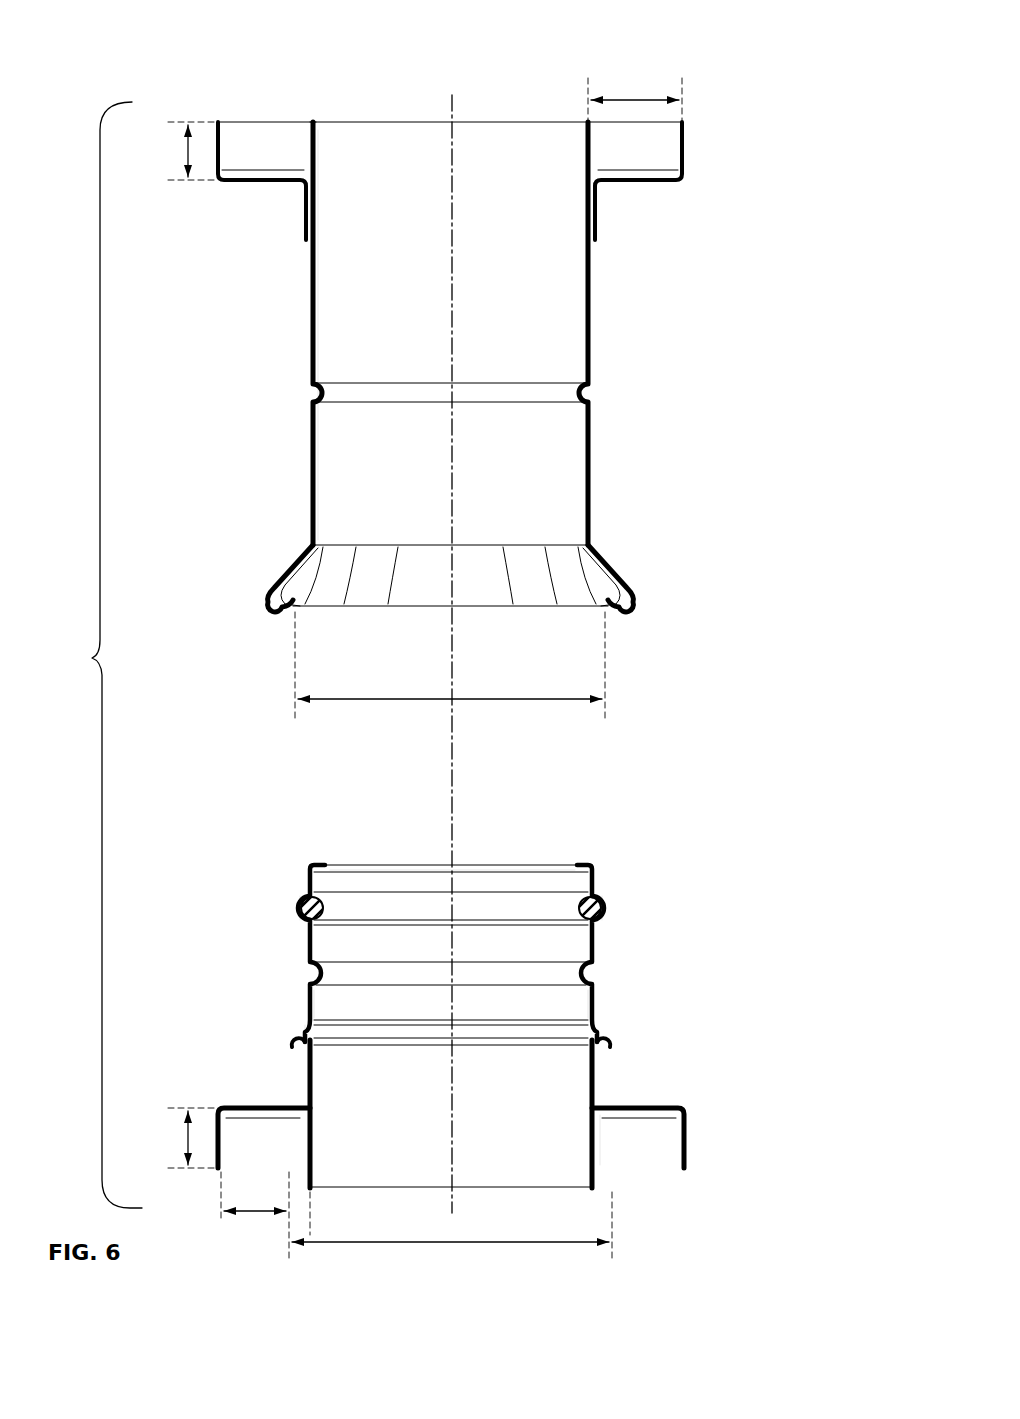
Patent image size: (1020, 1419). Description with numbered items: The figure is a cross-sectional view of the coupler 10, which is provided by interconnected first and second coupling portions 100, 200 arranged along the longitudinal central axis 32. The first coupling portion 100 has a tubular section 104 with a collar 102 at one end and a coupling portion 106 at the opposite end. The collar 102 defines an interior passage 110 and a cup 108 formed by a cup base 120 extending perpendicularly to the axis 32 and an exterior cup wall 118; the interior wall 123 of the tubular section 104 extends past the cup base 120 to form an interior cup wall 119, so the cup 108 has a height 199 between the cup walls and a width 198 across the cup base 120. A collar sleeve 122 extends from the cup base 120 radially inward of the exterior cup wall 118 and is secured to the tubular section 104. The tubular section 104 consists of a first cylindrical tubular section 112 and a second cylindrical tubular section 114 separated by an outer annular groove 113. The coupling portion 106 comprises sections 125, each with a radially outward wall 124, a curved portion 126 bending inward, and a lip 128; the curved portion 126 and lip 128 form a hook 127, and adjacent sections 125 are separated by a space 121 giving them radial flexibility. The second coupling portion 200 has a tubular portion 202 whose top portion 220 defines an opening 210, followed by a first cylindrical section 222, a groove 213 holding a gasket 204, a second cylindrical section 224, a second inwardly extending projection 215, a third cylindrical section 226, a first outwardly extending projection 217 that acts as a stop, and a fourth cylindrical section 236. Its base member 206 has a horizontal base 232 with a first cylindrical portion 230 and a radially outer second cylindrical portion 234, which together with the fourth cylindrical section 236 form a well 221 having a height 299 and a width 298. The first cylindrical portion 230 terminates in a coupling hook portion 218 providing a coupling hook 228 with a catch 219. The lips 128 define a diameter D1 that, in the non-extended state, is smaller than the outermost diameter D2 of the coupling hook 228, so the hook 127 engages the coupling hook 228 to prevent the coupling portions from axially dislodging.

The coupler 10 is at (100, 655).
The longitudinal central axis 32 is at (454, 102).
The first coupling portion 100 is at (421, 405).
The collar 102 is at (408, 146).
The tubular section 104 is at (515, 312).
The coupling portion 106 is at (491, 624).
The cup 108 is at (648, 168).
The interior passage 110 is at (483, 196).
The first cylindrical tubular section 112 is at (593, 283).
The outer annular groove 113 is at (594, 394).
The second cylindrical tubular section 114 is at (593, 472).
The exterior cup wall 118 is at (224, 137).
The interior cup wall 119 is at (316, 148).
The cup base 120 is at (275, 175).
The space 121 is at (510, 612).
The collar sleeve 122 is at (308, 230).
The interior wall 123 is at (316, 272).
The wall 124 is at (284, 566).
The sections 125 is at (368, 612).
The curved portion 126 is at (277, 618).
The hook 127 is at (292, 600).
The lip 128 is at (425, 610).
The width 198 is at (643, 100).
The height 199 is at (186, 150).
The second coupling portion 200 is at (446, 1028).
The tubular portion 202 is at (453, 939).
The gasket 204 is at (600, 912).
The base member 206 is at (445, 1153).
The opening 210 is at (380, 872).
The groove 213 is at (600, 892).
The second inwardly extending projection 215 is at (592, 973).
The first outwardly extending projection 217 is at (592, 1025).
The coupling hook portion 218 is at (292, 1033).
The catch 219 is at (298, 1050).
The top portion 220 is at (593, 862).
The well 221 is at (655, 1163).
The first cylindrical section 222 is at (597, 870).
The second cylindrical section 224 is at (592, 953).
The third cylindrical section 226 is at (592, 1000).
The coupling hook 228 is at (612, 1045).
The first cylindrical portion 230 is at (595, 1078).
The horizontal base 232 is at (660, 1107).
The second cylindrical portion 234 is at (686, 1138).
The fourth cylindrical section 236 is at (597, 1177).
The width 298 is at (262, 1214).
The height 299 is at (186, 1138).
The diameter D1 is at (503, 700).
The outermost diameter D2 is at (416, 1242).